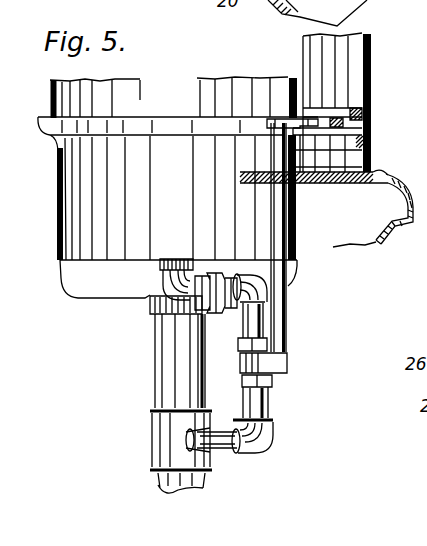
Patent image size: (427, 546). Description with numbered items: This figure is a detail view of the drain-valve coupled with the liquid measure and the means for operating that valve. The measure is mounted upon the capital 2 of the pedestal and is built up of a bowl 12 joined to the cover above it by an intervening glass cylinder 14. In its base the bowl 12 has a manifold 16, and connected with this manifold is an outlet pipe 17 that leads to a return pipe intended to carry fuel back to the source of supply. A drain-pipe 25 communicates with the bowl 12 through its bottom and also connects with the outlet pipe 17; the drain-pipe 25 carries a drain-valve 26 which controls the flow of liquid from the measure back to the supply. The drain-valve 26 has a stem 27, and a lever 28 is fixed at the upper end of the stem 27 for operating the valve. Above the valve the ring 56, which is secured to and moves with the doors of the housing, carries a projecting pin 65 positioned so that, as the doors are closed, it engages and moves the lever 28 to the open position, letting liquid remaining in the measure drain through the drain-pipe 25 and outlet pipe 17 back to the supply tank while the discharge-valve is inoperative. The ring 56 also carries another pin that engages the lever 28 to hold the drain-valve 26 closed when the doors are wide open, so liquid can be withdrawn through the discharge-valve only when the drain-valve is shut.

The capital 2 is at (392, 185).
The bowl 12 is at (62, 198).
The glass cylinder 14 is at (155, 97).
The manifold 16 is at (72, 285).
The outlet pipe 17 is at (155, 335).
The drain-pipe 25 is at (272, 405).
The drain-valve 26 is at (288, 362).
The stem 27 is at (288, 308).
The lever 28 is at (290, 122).
The ring 56 is at (358, 108).
The projecting pin 65 is at (335, 120).